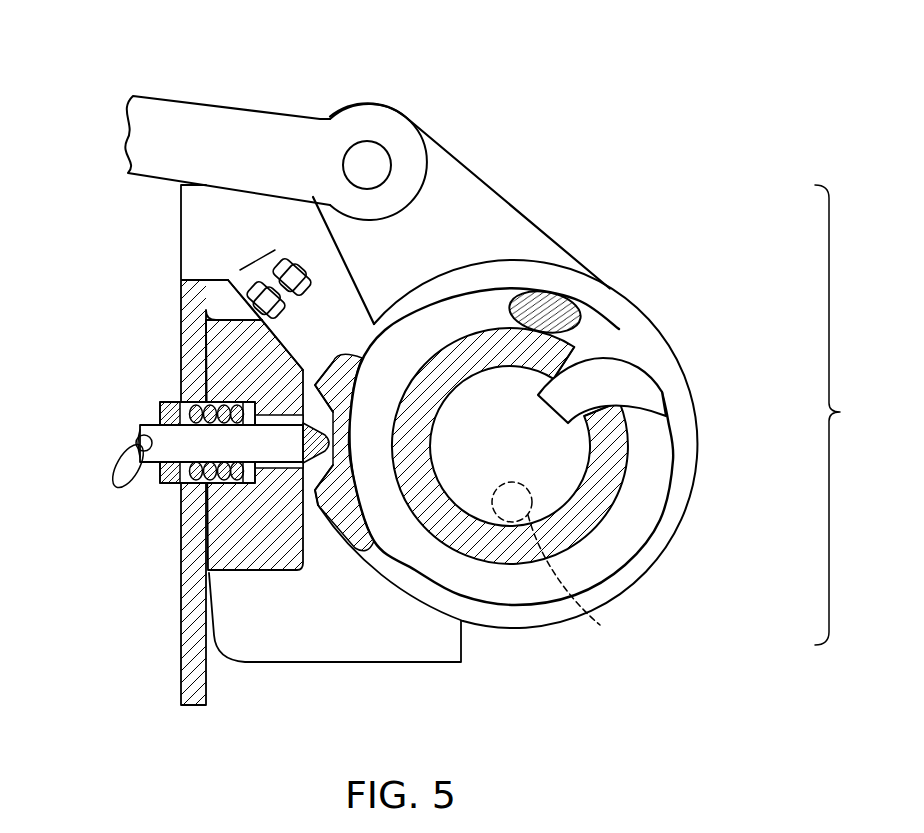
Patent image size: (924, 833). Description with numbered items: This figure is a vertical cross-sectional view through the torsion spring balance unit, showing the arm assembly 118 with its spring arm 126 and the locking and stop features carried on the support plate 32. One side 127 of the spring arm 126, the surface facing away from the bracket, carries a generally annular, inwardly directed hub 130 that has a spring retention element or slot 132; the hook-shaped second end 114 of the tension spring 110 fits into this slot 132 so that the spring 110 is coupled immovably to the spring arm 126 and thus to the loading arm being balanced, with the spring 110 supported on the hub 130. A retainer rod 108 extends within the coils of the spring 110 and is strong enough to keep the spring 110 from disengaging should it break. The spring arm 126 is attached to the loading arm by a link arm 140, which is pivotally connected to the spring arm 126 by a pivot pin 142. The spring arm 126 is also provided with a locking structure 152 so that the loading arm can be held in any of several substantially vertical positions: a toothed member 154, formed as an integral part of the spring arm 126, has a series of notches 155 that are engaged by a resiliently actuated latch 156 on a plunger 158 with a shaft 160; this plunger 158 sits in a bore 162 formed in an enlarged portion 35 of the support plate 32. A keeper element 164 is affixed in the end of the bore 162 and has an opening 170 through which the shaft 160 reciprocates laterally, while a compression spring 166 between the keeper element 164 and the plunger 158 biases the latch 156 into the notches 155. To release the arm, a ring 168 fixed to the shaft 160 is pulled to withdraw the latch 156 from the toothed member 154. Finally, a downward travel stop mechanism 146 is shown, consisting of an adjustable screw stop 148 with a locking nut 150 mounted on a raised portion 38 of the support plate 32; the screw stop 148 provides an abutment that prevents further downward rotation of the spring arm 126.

The support plate 32 is at (196, 690).
The enlarged portion 35 is at (265, 560).
The raised portion 38 is at (218, 300).
The retainer rod 108 is at (590, 579).
The tension spring 110 is at (686, 421).
The second end 114 is at (567, 400).
The arm assembly 118 is at (860, 415).
The spring arm 126 is at (490, 229).
The side 127 is at (578, 306).
The hub 130 is at (512, 540).
The slot 132 is at (588, 336).
The link arm 140 is at (185, 115).
The pivot pin 142 is at (370, 152).
The downward travel stop mechanism 146 is at (265, 230).
The screw stop 148 is at (318, 270).
The locking nut 150 is at (236, 284).
The locking structure 152 is at (153, 598).
The toothed member 154 is at (345, 550).
The notches 155 is at (340, 370).
The latch 156 is at (312, 560).
The plunger 158 is at (283, 456).
The shaft 160 is at (145, 442).
The bore 162 is at (168, 402).
The keeper element 164 is at (168, 475).
The compression spring 166 is at (205, 408).
The ring 168 is at (114, 466).
The opening 170 is at (175, 428).